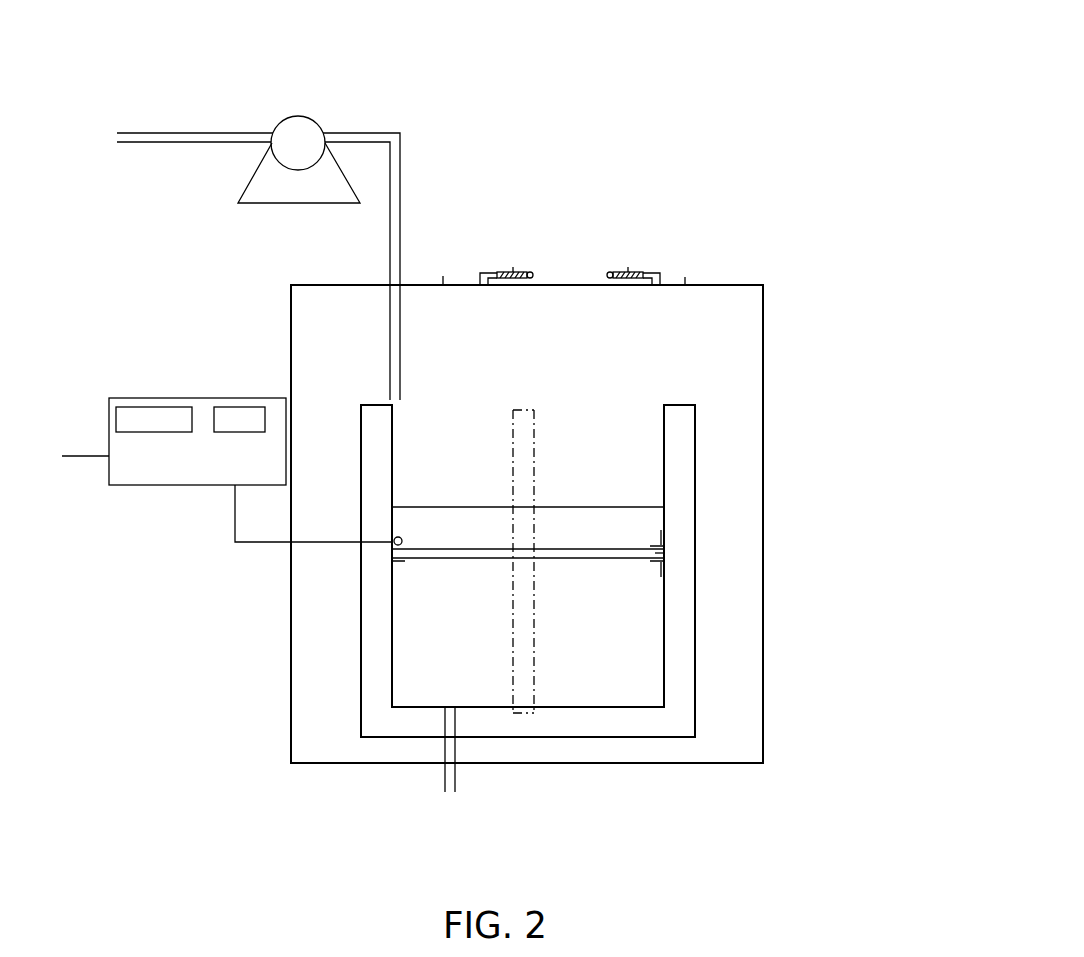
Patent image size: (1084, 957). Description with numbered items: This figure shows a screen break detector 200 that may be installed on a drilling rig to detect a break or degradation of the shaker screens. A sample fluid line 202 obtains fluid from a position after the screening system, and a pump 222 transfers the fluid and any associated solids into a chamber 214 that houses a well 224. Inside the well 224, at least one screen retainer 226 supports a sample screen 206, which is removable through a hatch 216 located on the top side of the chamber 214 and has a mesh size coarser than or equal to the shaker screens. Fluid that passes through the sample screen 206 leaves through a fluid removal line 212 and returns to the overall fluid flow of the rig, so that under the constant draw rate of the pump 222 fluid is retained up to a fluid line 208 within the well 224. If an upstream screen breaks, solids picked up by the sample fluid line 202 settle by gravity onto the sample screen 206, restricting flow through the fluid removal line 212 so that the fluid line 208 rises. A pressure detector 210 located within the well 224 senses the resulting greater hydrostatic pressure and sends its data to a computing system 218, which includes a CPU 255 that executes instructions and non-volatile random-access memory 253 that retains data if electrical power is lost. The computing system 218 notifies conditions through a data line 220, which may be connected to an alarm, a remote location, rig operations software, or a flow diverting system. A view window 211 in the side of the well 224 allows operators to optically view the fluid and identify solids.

The screen break detector 200 is at (813, 203).
The sample fluid line 202 is at (179, 130).
The sample screen 206 is at (662, 559).
The fluid line 208 is at (619, 507).
The pressure detector 210 is at (393, 545).
The view window 211 is at (516, 482).
The fluid removal line 212 is at (452, 780).
The chamber 214 is at (763, 540).
The hatch 216 is at (522, 269).
The computing system 218 is at (248, 440).
The data line 220 is at (82, 458).
The pump 222 is at (305, 117).
The well 224 is at (687, 458).
The screen retainer 226 is at (658, 560).
The non-volatile random-access memory 253 is at (173, 405).
The CPU 255 is at (232, 405).